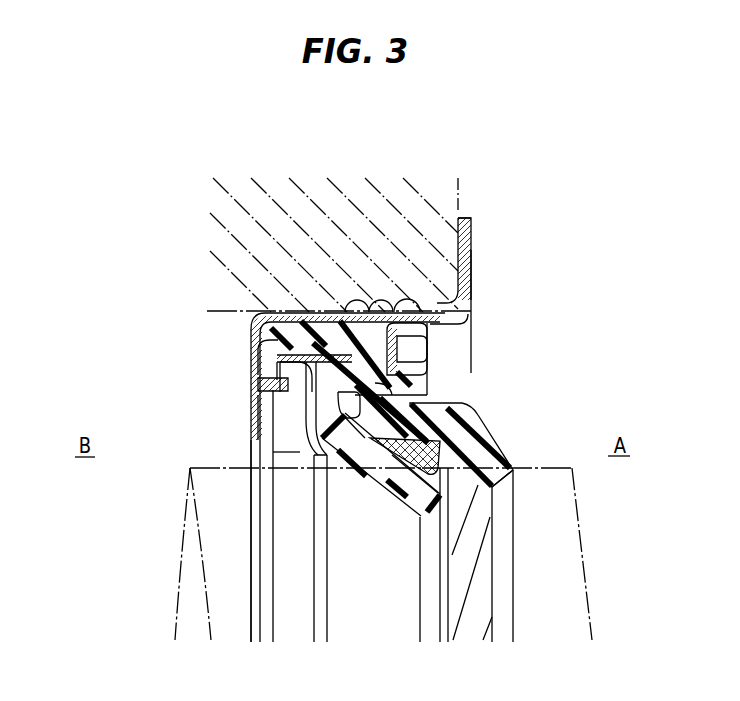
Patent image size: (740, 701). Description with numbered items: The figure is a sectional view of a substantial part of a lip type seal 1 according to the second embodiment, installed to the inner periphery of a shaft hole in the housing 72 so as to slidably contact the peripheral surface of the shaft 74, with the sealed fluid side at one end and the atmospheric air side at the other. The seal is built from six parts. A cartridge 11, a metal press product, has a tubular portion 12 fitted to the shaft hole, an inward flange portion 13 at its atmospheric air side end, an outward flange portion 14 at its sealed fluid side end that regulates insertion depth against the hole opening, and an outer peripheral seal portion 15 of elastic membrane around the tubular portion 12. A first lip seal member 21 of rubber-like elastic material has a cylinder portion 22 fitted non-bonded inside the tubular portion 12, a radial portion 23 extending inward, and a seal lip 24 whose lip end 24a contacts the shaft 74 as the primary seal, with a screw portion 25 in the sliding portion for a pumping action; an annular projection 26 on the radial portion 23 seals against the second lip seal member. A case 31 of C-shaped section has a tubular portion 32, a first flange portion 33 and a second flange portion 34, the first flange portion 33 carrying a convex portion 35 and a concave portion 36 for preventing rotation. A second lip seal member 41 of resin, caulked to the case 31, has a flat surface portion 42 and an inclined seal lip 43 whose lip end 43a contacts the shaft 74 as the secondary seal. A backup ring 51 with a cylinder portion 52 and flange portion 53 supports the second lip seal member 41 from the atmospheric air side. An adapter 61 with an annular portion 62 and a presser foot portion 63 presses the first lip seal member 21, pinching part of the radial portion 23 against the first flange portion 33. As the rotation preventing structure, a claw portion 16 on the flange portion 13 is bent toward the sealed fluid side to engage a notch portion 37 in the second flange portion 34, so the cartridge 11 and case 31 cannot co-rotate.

The lip type seal 1 is at (478, 258).
The cartridge 11 is at (468, 247).
The tubular portion 12 is at (322, 318).
The flange portion 13 is at (256, 340).
The outward flange portion 14 is at (471, 218).
The outer peripheral seal portion 15 is at (385, 302).
The claw portion 16 is at (260, 366).
The first lip seal member 21 is at (262, 316).
The cylinder portion 22 is at (309, 320).
The radial portion 23 is at (430, 398).
The seal lip 24 is at (452, 412).
The lip end 24a is at (498, 472).
The screw portion 25 is at (460, 622).
The annular projection 26 is at (340, 403).
The case 31 is at (250, 330).
The tubular portion 32 is at (300, 318).
The first flange portion 33 is at (436, 377).
The second flange portion 34 is at (258, 352).
The convex portion 35 is at (280, 432).
The concave portion 36 is at (450, 402).
The notch portion 37 is at (260, 380).
The second lip seal member 41 is at (363, 473).
The flat surface portion 42 is at (358, 320).
The seal lip 43 is at (392, 500).
The lip end 43a is at (418, 507).
The backup ring 51 is at (260, 411).
The cylinder portion 52 is at (260, 392).
The flange portion 53 is at (262, 452).
The adapter 61 is at (436, 330).
The annular portion 62 is at (410, 302).
The presser foot portion 63 is at (433, 351).
The housing 72 is at (458, 207).
The shaft 74 is at (537, 618).